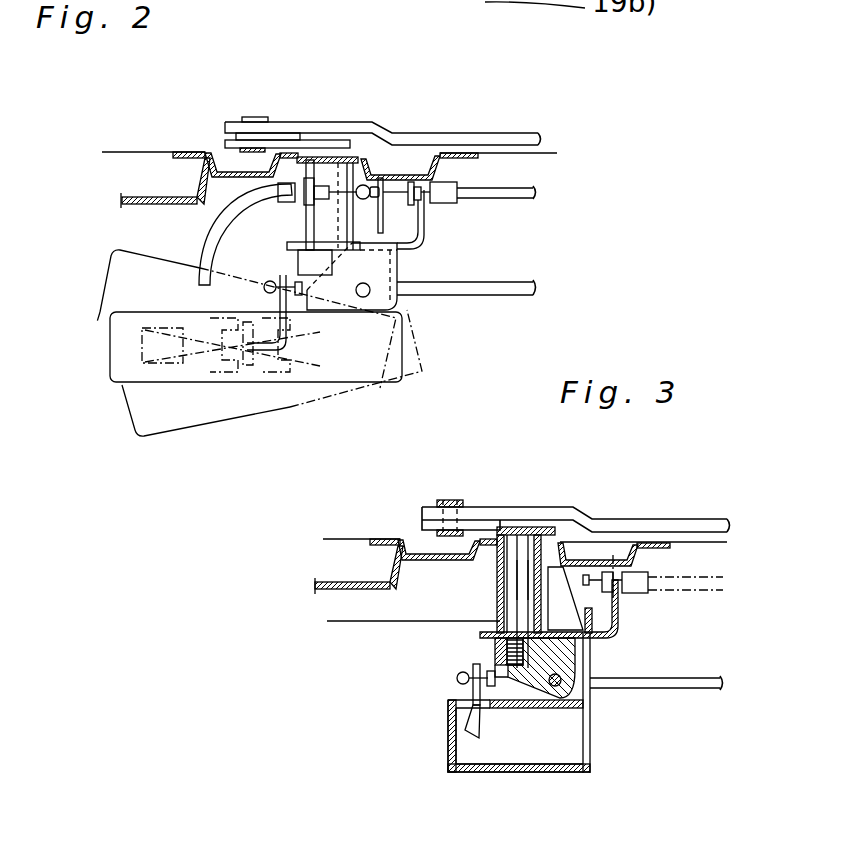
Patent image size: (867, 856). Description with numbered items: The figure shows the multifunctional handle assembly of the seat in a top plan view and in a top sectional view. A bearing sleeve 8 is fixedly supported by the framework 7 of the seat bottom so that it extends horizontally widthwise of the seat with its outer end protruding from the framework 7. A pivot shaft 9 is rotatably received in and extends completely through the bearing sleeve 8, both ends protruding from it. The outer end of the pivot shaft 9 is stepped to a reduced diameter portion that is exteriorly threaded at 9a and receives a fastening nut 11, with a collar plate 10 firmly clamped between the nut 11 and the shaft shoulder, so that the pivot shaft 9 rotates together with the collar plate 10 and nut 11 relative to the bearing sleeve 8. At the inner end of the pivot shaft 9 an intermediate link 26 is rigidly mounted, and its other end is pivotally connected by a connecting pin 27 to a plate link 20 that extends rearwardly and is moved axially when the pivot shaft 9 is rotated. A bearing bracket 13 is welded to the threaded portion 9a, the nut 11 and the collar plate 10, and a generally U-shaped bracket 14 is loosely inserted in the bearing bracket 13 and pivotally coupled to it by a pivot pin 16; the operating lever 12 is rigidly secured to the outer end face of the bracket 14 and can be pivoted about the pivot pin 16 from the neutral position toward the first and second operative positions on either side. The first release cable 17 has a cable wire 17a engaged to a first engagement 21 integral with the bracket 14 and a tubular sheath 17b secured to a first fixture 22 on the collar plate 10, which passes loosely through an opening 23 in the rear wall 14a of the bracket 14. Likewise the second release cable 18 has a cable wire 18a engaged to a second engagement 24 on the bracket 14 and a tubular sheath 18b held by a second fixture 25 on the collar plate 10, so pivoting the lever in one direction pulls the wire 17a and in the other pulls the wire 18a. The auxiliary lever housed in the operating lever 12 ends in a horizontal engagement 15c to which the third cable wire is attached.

In FIG. 3, the framework 7 is at (327, 621).
In FIG. 3, the bearing sleeve 8 is at (497, 573).
In FIG. 3, the pivot shaft 9 is at (513, 588).
In FIG. 3, the exteriorly threaded reduced diameter portion 9a is at (495, 652).
In FIG. 3, the collar plate 10 is at (480, 635).
In FIG. 3, the fastening nut 11 is at (487, 676).
In FIG. 2, the operating lever 12 is at (112, 252).
In FIG. 3, the operating lever 12 is at (537, 772).
In FIG. 3, the bearing bracket 13 is at (590, 660).
In FIG. 2, the bracket 14 is at (400, 298).
In FIG. 3, the bracket 14 is at (578, 700).
In FIG. 3, the rear wall 14a is at (590, 664).
In FIG. 3, the engagement 15c is at (470, 698).
In FIG. 3, the pivot pin 16 is at (592, 688).
In FIG. 2, the first release cable 17 is at (525, 242).
In FIG. 2, the cable wire 17a is at (430, 246).
In FIG. 2, the tubular sheath 17b is at (532, 237).
In FIG. 2, the second release cable 18 is at (278, 113).
In FIG. 2, the cable wire 18a is at (330, 185).
In FIG. 2, the tubular sheath 18b is at (233, 207).
In FIG. 2, the plate link 20 is at (485, 135).
In FIG. 3, the plate link 20 is at (648, 527).
In FIG. 2, the first engagement 21 is at (380, 185).
In FIG. 2, the first fixture 22 is at (468, 205).
In FIG. 3, the first fixture 22 is at (620, 615).
In FIG. 3, the opening 23 is at (620, 643).
In FIG. 2, the second engagement 24 is at (348, 185).
In FIG. 2, the second fixture 25 is at (297, 184).
In FIG. 3, the intermediate link 26 is at (500, 533).
In FIG. 3, the connecting pin 27 is at (428, 522).